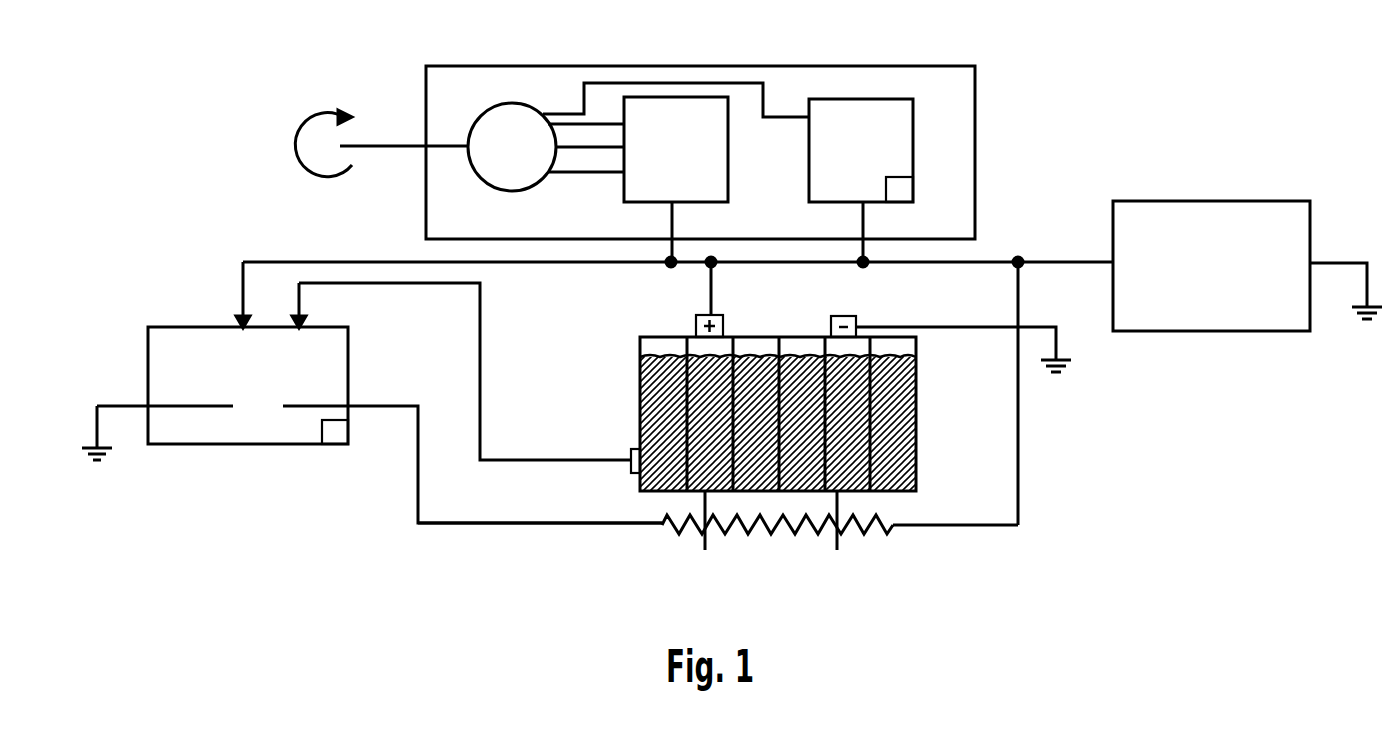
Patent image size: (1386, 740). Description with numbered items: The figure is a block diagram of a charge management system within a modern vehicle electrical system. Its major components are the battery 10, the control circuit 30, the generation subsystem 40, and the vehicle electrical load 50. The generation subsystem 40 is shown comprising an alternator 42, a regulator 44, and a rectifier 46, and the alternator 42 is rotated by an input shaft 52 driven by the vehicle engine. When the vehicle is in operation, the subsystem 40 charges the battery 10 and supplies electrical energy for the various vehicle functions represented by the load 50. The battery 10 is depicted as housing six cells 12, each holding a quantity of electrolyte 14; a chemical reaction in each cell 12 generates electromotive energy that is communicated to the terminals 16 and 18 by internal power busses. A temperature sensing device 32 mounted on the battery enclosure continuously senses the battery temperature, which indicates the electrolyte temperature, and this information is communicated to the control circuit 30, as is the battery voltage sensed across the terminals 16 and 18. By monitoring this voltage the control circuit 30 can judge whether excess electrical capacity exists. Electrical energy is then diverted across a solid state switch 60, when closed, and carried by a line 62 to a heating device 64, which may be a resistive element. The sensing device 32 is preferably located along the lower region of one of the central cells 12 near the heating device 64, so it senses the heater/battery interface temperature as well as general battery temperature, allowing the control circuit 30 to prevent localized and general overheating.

The battery 10 is at (804, 414).
The cells 12 is at (766, 537).
The electrolyte 14 is at (900, 372).
The terminal 16 is at (698, 330).
The terminal 18 is at (857, 322).
The control circuit 30 is at (307, 447).
The temperature sensing device 32 is at (622, 474).
The generation subsystem 40 is at (976, 170).
The alternator 42 is at (537, 108).
The regulator 44 is at (668, 95).
The rectifier 46 is at (845, 98).
The vehicle electrical load 50 is at (1190, 333).
The input shaft 52 is at (392, 146).
The solid state switch 60 is at (256, 413).
The line 62 is at (470, 525).
The heating device 64 is at (880, 530).